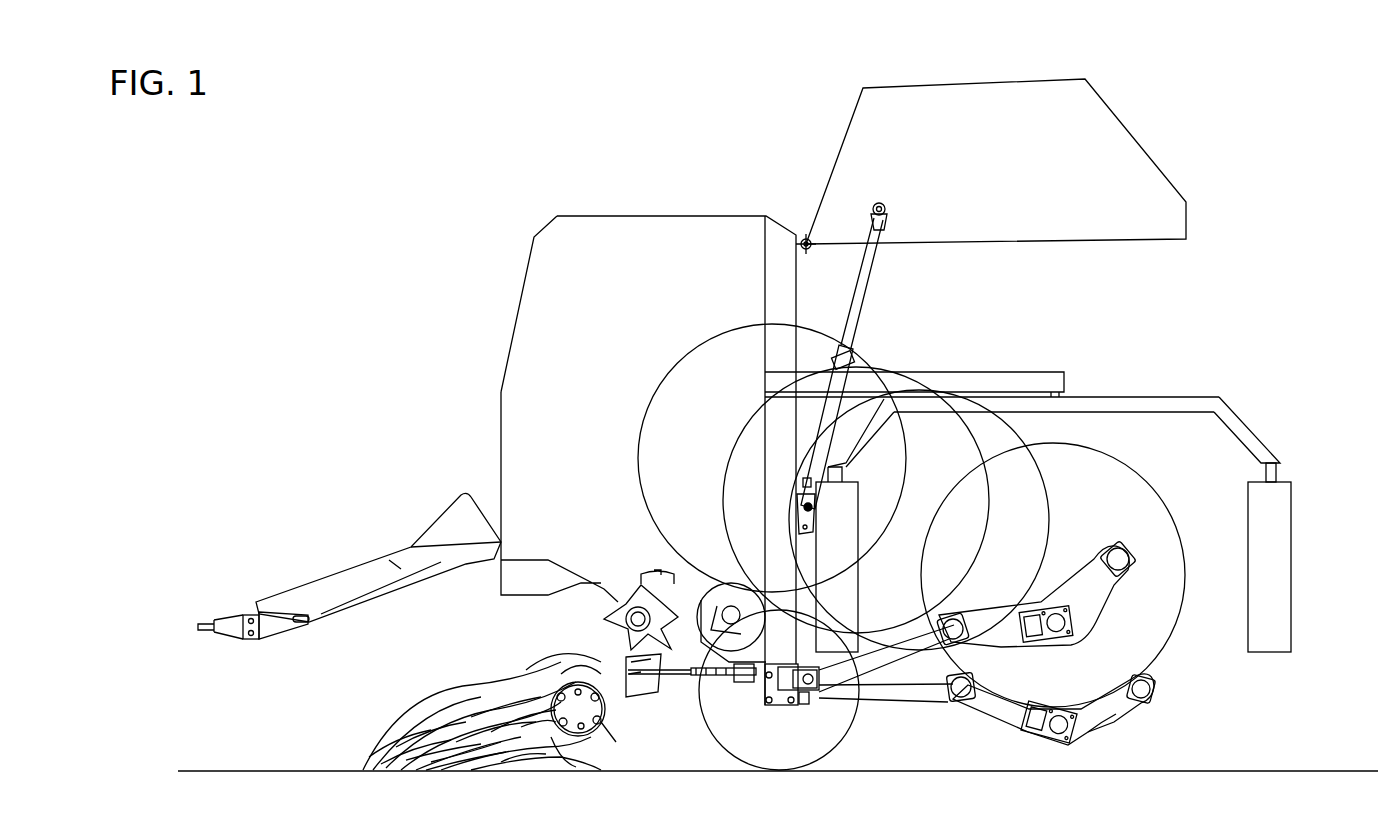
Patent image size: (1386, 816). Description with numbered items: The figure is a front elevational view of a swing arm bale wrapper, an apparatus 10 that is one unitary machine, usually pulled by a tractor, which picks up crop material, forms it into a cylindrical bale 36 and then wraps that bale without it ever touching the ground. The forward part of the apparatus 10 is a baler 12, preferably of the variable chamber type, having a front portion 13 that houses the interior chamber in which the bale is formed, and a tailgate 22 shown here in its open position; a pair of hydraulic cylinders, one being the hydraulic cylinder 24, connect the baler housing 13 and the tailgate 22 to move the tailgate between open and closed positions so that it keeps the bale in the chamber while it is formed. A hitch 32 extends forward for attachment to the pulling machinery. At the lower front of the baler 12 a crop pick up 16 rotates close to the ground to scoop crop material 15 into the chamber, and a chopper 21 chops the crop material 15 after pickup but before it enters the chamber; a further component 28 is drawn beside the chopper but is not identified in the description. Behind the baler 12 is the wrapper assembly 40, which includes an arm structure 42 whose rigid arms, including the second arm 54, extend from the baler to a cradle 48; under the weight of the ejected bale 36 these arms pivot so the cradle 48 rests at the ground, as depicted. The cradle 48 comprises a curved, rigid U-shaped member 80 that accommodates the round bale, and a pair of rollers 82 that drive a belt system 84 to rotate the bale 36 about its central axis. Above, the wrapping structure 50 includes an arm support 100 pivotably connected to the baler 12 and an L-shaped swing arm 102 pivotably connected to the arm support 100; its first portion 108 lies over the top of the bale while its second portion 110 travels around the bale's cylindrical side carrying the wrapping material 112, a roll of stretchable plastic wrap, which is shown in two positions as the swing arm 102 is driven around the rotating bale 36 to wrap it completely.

The apparatus for forming and wrapping round bales 10 is at (418, 168).
The baler 12 is at (697, 205).
The front portion 13 is at (505, 347).
The crop material 15 is at (450, 702).
The crop pick up 16 is at (533, 660).
The chopper 21 is at (623, 648).
The tailgate 22 is at (975, 72).
The hydraulic cylinder 24 is at (838, 377).
The drive shaft 28 is at (700, 720).
The hitch 32 is at (315, 573).
The bale 36 is at (1097, 463).
The wrapper assembly 40 is at (1313, 280).
The arm structure 42 is at (884, 705).
The cradle 48 is at (1082, 583).
The wrapping structure 50 is at (1035, 350).
The second arm 54 is at (883, 667).
The U-shaped member 80 is at (1070, 615).
The rollers 82 is at (962, 685).
The belt system 84 is at (1098, 697).
The arm support 100 is at (1053, 380).
The swing arm 102 is at (1147, 403).
The first portion 108 is at (1200, 395).
The second portion 110 is at (1264, 468).
The wrapping material 112 is at (1266, 536).